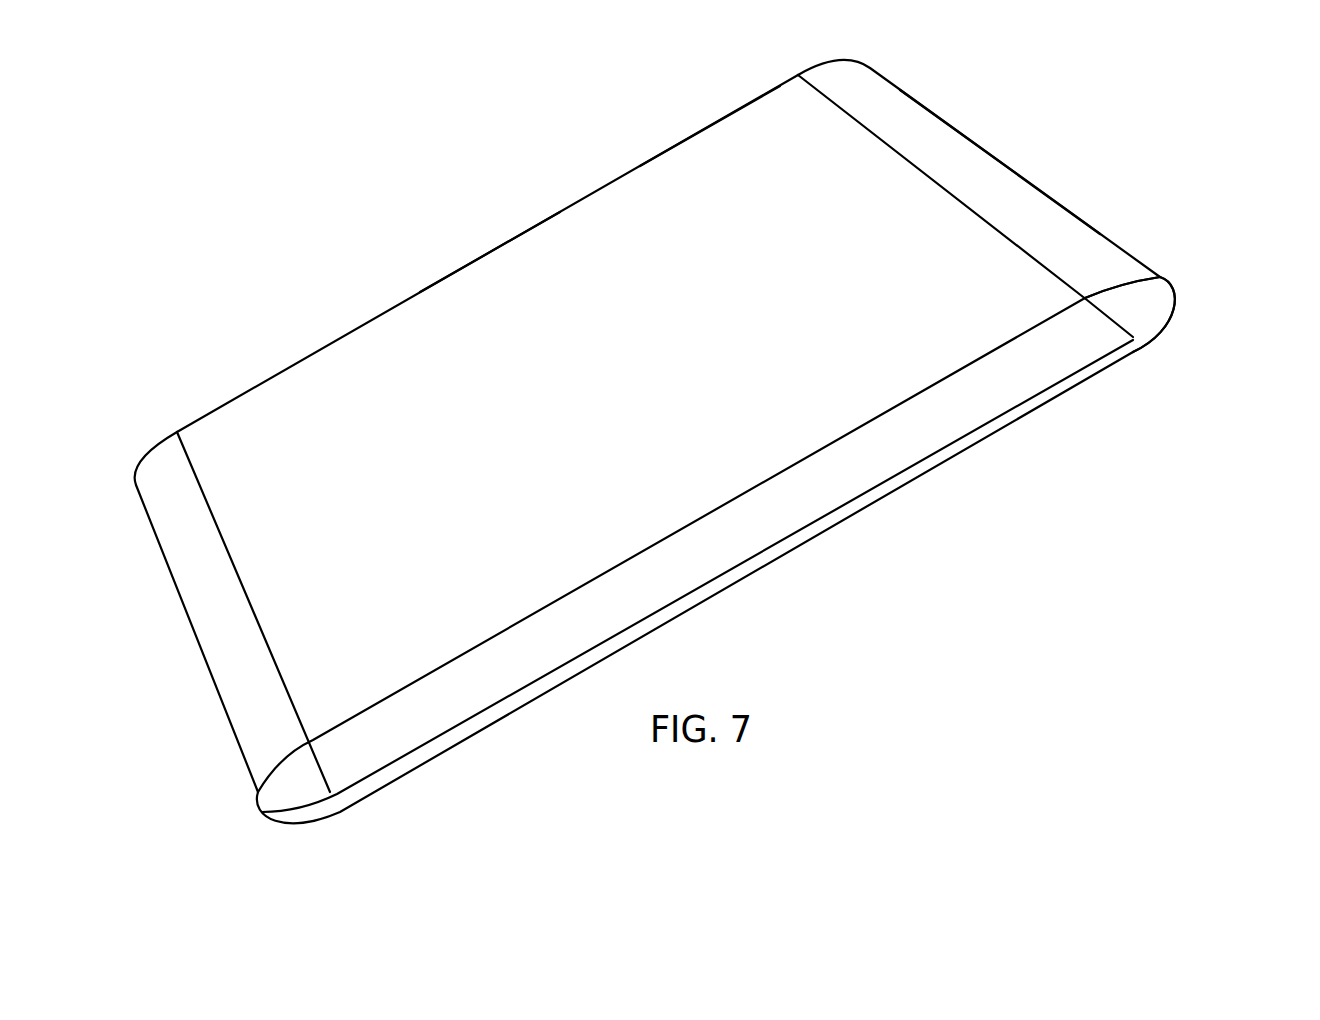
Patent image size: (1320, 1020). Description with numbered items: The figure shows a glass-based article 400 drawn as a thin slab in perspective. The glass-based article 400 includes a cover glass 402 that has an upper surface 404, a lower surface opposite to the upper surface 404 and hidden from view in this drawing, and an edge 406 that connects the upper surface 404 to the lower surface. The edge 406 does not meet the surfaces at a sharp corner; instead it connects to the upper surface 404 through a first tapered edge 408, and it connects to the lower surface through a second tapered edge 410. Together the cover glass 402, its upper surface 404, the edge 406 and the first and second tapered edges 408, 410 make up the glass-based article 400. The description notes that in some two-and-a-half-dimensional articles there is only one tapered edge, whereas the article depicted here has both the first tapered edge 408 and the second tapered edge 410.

The glass-based article 400 is at (702, 430).
The cover glass 402 is at (539, 240).
The upper surface 404 is at (713, 145).
The edge 406 is at (1007, 165).
The first tapered edge 408 is at (1117, 283).
The second tapered edge 410 is at (1157, 333).